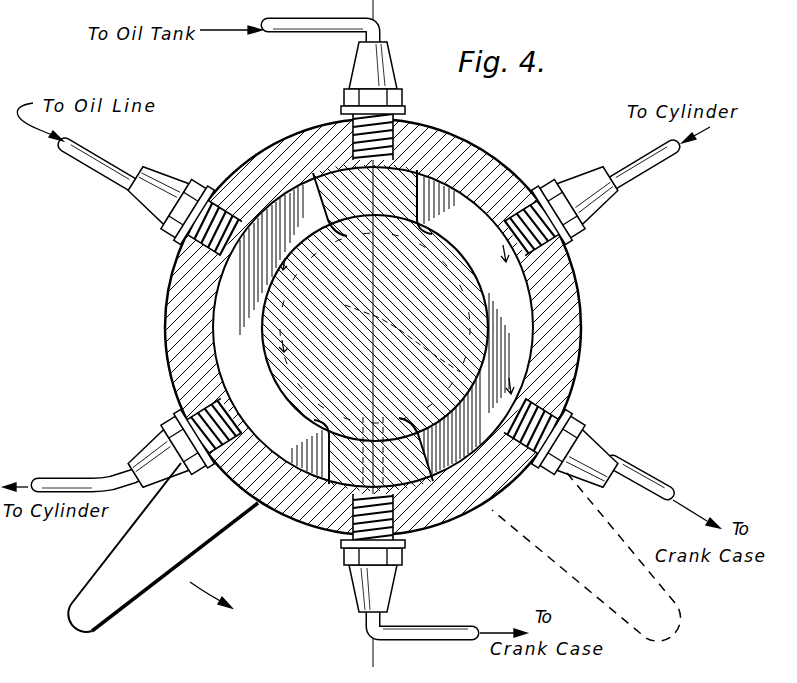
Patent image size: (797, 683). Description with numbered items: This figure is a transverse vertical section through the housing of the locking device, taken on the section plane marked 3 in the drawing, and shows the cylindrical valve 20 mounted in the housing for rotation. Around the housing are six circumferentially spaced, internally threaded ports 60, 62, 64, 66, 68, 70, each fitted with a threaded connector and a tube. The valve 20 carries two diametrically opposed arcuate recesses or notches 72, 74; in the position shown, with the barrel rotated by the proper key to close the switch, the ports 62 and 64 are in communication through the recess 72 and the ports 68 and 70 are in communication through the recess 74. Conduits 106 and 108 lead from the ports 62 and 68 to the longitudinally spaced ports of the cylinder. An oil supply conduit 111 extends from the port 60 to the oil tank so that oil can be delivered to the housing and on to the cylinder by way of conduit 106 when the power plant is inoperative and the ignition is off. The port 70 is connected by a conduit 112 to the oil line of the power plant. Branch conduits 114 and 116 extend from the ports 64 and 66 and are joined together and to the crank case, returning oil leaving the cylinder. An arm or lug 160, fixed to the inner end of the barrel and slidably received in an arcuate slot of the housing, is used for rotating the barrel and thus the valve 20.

The section line 3- 3 is at (352, 42).
The cylindrical valve 20 is at (476, 152).
The internally threaded port 60 is at (395, 135).
The internally threaded port 62 is at (557, 243).
The internally threaded port 64 is at (555, 397).
The internally threaded port 66 is at (412, 537).
The internally threaded port 68 is at (197, 397).
The internally threaded port 70 is at (219, 228).
The arcuate recess 72 is at (505, 329).
The arcuate recess 74 is at (210, 304).
The conduit 106 is at (653, 158).
The conduit 108 is at (55, 477).
The oil supply conduit 111 is at (323, 27).
The conduit 112 is at (88, 157).
The branch conduit 114 is at (638, 480).
The branch conduit 116 is at (432, 623).
The arm or lug 160 is at (112, 595).